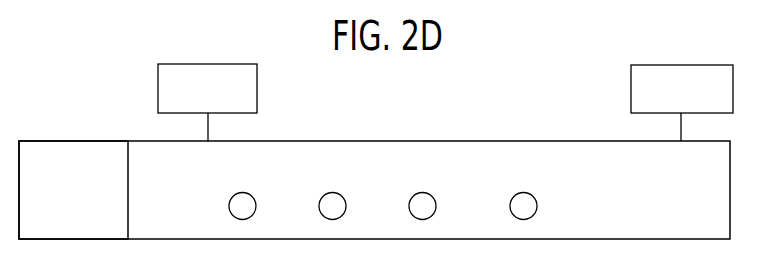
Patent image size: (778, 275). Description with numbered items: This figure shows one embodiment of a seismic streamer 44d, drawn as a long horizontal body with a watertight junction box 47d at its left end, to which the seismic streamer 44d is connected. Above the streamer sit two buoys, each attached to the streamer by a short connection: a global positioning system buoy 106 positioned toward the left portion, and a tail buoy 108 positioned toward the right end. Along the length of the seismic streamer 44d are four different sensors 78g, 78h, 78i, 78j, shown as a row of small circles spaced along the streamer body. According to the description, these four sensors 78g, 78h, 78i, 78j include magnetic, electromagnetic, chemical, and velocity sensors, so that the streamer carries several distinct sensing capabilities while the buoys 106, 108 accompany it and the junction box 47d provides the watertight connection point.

The seismic streamer 44d is at (372, 141).
The watertight junction box 47d is at (82, 147).
The global positioning system buoy 106 is at (200, 72).
The tail buoy 108 is at (677, 70).
The sensor 78g is at (253, 197).
The sensor 78h is at (343, 197).
The sensor 78i is at (433, 197).
The sensor 78j is at (534, 197).